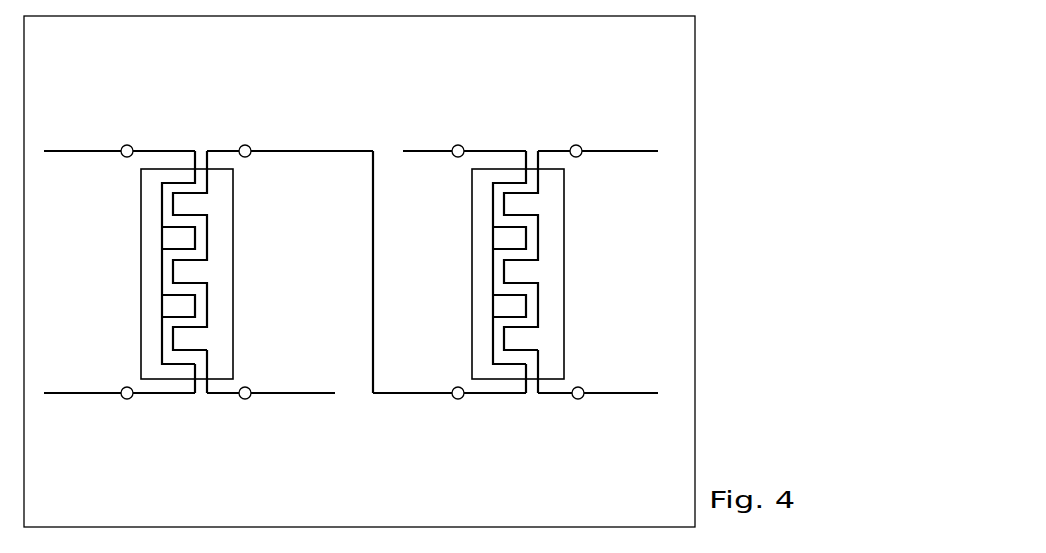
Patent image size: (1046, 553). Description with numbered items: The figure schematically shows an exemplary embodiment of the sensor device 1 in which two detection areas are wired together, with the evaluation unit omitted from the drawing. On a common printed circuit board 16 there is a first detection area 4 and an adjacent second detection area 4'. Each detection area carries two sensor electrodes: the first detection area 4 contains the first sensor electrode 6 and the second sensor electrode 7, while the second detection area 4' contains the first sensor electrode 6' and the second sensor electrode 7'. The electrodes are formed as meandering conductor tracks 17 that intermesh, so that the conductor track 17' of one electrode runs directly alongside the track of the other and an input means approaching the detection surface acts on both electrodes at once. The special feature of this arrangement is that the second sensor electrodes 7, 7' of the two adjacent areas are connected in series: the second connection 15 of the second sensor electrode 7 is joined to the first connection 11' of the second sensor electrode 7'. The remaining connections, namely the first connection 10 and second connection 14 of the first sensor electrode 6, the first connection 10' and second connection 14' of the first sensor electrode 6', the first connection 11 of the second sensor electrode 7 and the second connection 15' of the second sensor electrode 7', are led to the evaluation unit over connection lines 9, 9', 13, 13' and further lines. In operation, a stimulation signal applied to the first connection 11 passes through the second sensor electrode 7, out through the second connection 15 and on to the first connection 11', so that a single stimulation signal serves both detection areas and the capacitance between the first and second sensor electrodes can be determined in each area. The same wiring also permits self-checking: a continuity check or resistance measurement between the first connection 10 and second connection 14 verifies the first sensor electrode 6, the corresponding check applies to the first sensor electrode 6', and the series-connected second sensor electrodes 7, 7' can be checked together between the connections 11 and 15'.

The sensor device 1 is at (711, 262).
The detection area 4 is at (224, 274).
The second detection area 4' is at (558, 274).
The first sensor electrode 6 is at (125, 257).
The first sensor electrode 6' is at (573, 250).
The second sensor electrode 7 is at (239, 250).
The second sensor electrode 7' is at (461, 257).
The connection line 9 is at (208, 273).
The connection line 9' is at (598, 98).
The first connection 10 is at (161, 113).
The first connection 10' is at (578, 103).
The first connection 11 is at (257, 447).
The first connection 11' is at (481, 444).
The connection line 13 is at (285, 274).
The connection line 13' is at (524, 447).
The second connection 14 is at (147, 441).
The second connection 14' is at (587, 444).
The second connection 15 is at (240, 108).
The second connection 15' is at (491, 108).
The printed circuit board 16 is at (694, 360).
The meandering conductor tracks 17 is at (261, 369).
The conductor track 17' is at (598, 368).